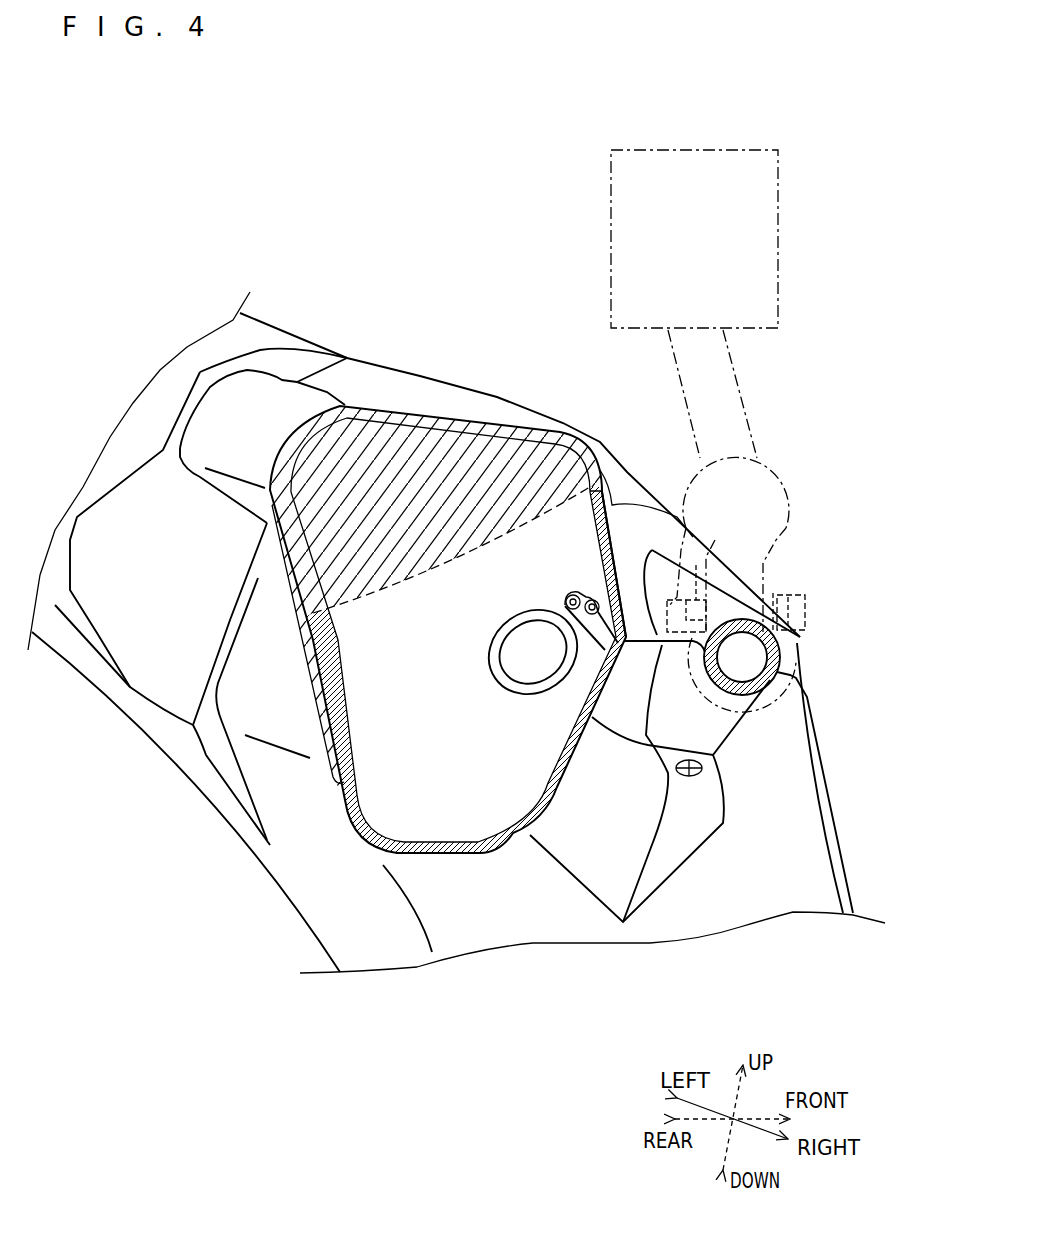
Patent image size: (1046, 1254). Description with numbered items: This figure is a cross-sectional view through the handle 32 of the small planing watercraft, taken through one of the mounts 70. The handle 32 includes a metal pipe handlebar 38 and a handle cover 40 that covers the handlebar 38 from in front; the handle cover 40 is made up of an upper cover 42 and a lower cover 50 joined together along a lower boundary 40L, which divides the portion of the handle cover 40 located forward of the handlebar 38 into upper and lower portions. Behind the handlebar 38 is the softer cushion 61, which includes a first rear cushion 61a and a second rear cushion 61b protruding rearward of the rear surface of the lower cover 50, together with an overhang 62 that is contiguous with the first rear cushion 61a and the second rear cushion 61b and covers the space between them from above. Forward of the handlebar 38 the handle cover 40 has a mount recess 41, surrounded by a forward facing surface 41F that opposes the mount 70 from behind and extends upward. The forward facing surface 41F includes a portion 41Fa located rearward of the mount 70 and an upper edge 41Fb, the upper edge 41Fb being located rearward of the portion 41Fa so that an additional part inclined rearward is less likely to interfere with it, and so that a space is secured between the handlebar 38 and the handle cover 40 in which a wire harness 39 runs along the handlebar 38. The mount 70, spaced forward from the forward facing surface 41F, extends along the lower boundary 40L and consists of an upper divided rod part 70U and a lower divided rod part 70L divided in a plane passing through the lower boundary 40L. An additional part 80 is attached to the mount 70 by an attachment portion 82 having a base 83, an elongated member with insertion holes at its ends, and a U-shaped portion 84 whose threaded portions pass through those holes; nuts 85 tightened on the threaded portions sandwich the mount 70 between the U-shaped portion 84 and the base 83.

The handle 32 is at (361, 341).
The handlebar 38 is at (490, 676).
The wire harness 39 is at (567, 594).
The handle cover 40 is at (500, 393).
The lower boundary 40L is at (632, 637).
The mount recess 41 is at (685, 710).
The forward facing surface 41F is at (617, 543).
The portion of forward facing surface 41Fa is at (650, 645).
The upper edge of forward facing surface 41Fb is at (612, 497).
The upper cover 42 is at (667, 572).
The lower cover 50 is at (797, 793).
The front cover 61 is at (418, 360).
The first rear cushion 61a is at (236, 633).
The second rear cushion 61b is at (145, 417).
The overhang 62 is at (270, 392).
The mount 70 is at (750, 700).
The upper divided rod part 70U is at (780, 655).
The lower divided rod part 70L is at (762, 685).
The additional part 80 is at (729, 140).
The attachment portion 82 is at (812, 596).
The base 83 is at (808, 624).
The U-shaped portion 84 is at (795, 663).
The nuts 85 is at (728, 544).